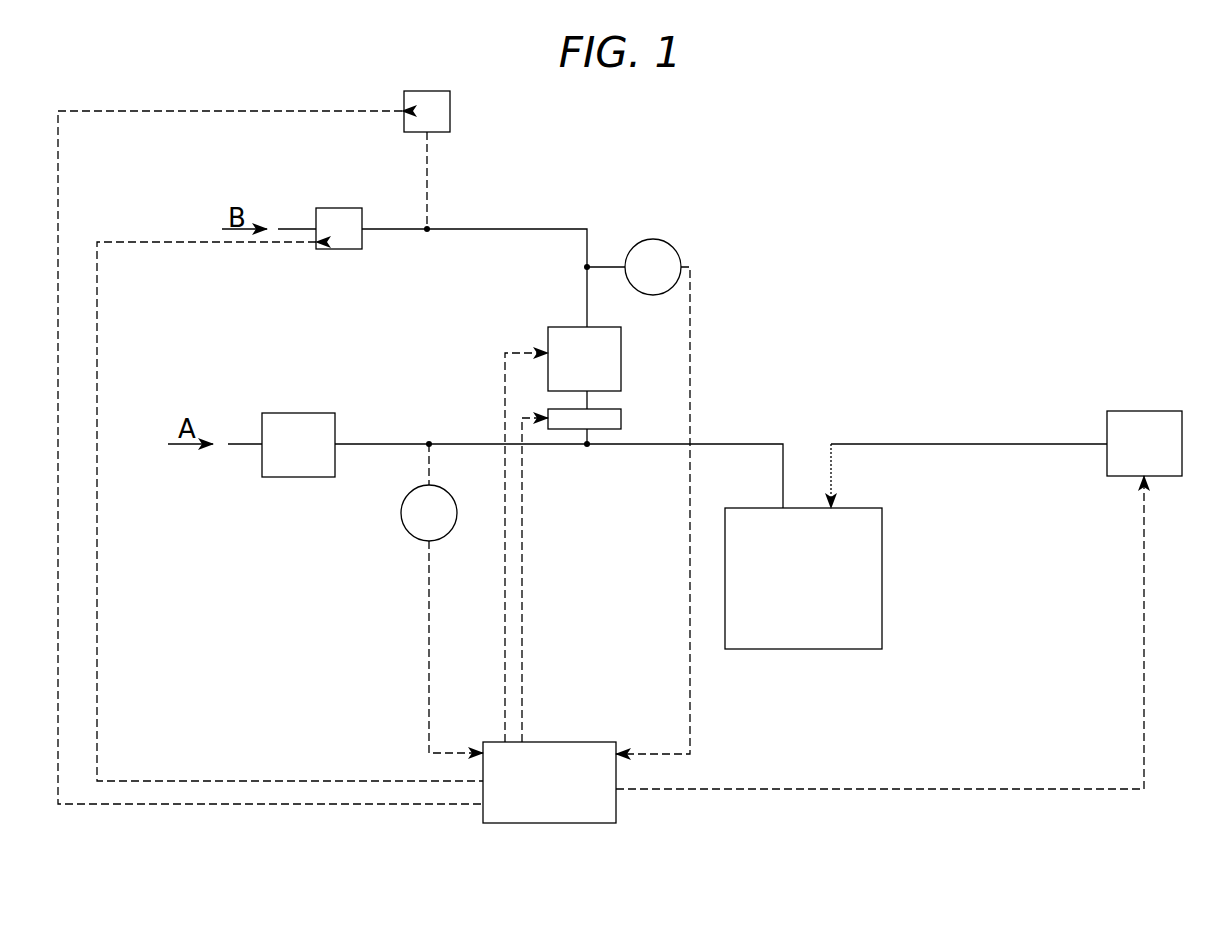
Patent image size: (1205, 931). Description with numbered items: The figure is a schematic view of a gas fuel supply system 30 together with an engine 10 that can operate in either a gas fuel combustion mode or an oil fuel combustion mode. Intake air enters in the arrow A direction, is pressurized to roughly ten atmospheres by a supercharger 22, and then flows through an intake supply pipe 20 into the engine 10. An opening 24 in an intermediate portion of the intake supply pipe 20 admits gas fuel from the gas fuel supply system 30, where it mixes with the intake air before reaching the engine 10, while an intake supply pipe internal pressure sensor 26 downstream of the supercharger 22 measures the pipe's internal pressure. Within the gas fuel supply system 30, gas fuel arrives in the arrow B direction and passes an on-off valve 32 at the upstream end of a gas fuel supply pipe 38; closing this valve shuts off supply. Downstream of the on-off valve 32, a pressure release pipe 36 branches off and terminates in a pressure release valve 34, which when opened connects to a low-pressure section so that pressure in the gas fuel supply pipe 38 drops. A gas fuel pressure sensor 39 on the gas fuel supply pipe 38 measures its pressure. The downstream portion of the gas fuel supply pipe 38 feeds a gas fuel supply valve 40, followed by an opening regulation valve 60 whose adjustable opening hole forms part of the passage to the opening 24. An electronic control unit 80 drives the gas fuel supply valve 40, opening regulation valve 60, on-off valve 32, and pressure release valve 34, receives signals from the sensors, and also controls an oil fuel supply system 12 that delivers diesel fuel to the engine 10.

The engine 10 is at (882, 583).
The oil fuel supply system 12 is at (1138, 411).
The intake supply pipe 20 is at (375, 444).
The supercharger 22 is at (288, 477).
The opening 24 is at (587, 452).
The intake supply pipe internal pressure sensor 26 is at (410, 535).
The gas fuel supply system 30 is at (638, 130).
The on-off valve 32 is at (340, 249).
The pressure release valve 34 is at (450, 112).
The pressure release pipe 36 is at (427, 172).
The gas fuel supply pipe 38 is at (543, 229).
The gas fuel pressure sensor 39 is at (677, 243).
The gas fuel supply valve 40 is at (553, 327).
The opening regulation valve 60 is at (621, 415).
The electronic control unit 80 is at (545, 823).